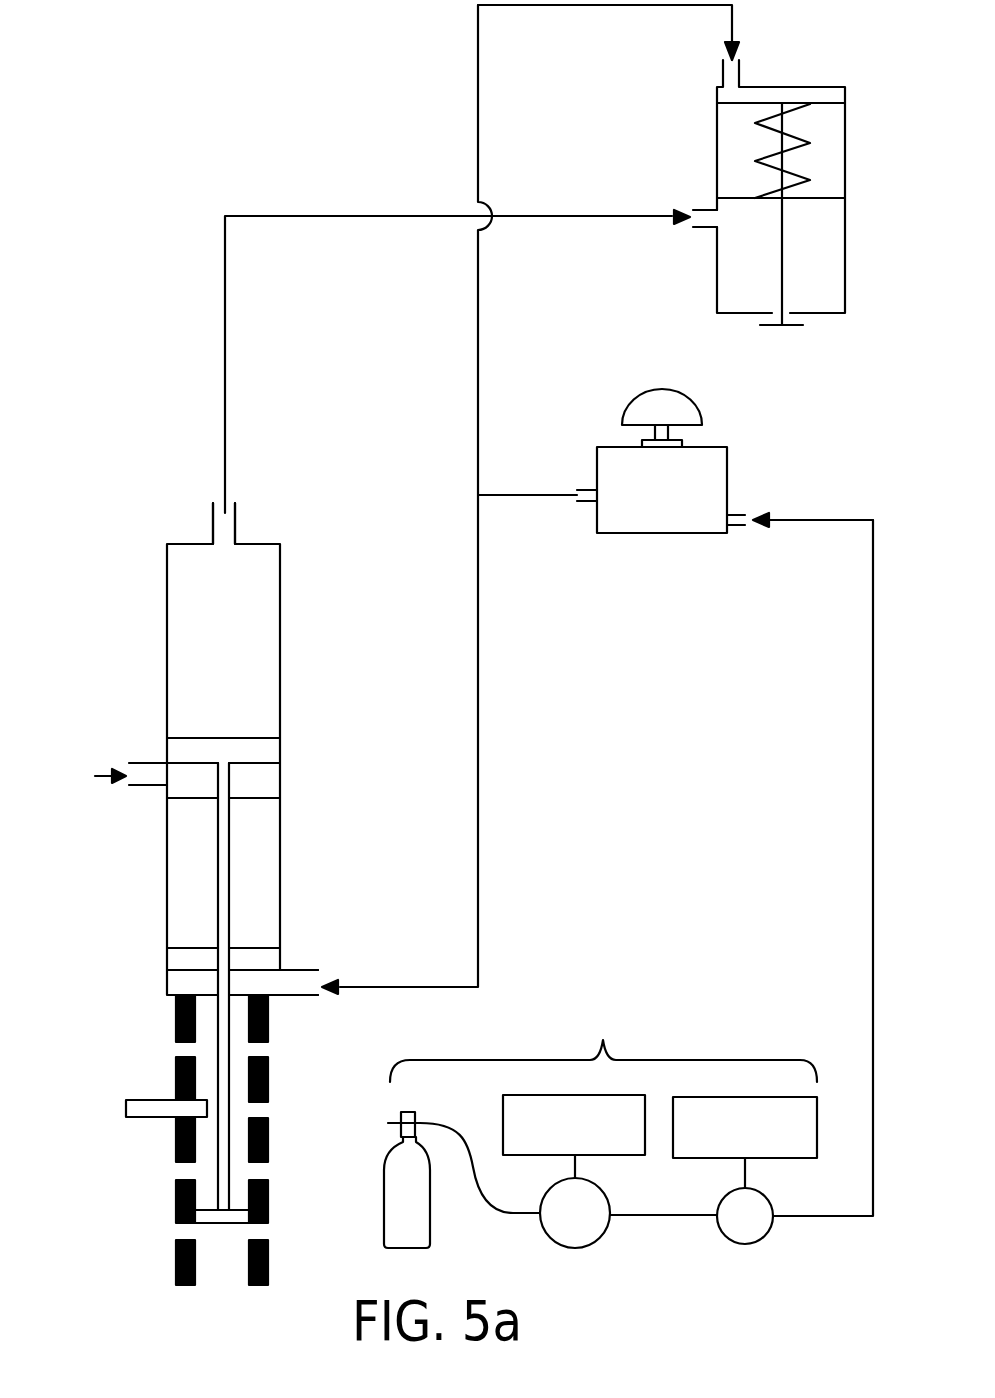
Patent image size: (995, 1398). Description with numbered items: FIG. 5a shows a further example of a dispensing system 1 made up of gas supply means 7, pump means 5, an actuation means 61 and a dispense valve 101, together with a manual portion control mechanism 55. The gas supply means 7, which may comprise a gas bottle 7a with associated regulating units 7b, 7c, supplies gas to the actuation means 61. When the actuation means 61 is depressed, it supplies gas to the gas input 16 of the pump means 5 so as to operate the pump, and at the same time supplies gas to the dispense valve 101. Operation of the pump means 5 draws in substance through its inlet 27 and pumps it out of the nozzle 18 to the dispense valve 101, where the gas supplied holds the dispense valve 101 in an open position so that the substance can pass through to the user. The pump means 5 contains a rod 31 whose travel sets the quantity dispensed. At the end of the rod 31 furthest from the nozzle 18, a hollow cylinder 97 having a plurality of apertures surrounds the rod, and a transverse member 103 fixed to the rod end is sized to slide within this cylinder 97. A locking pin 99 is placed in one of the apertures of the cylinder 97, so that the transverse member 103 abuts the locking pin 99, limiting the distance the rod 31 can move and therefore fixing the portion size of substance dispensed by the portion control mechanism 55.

The dispensing system 1 is at (240, 126).
The pump means 5 is at (150, 615).
The gas supply means 7 is at (569, 1146).
The gas bottle 7a is at (384, 1208).
The pump 7b is at (552, 1242).
The pump 7c is at (726, 1242).
The gas input 16 is at (305, 997).
The nozzle 18 is at (237, 512).
The inlet 27 is at (145, 786).
The rod 31 is at (232, 860).
The portion control mechanism 55 is at (140, 1013).
The actuation means 61 is at (657, 560).
The hollow cylinder 97 is at (172, 1192).
The locking pin 99 is at (128, 1100).
The dispense valve 101 is at (690, 302).
The transverse member 103 is at (235, 1225).